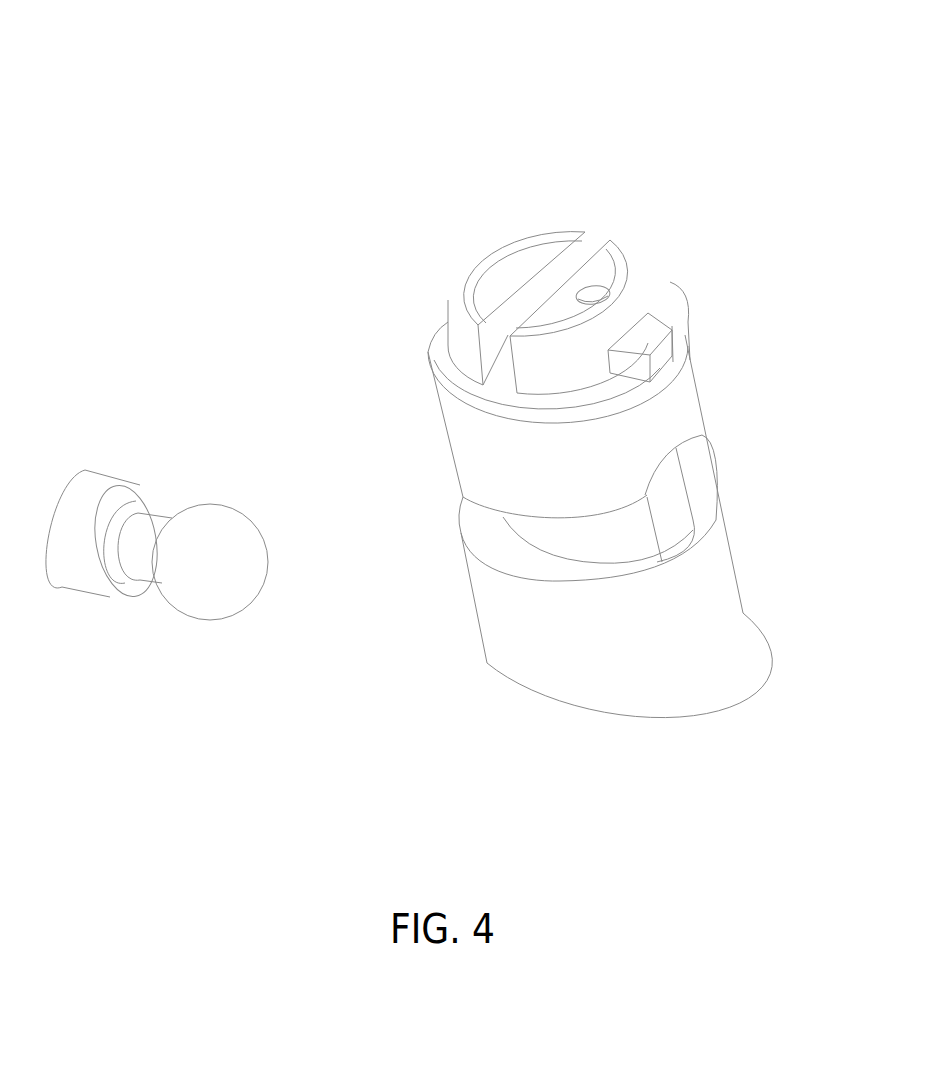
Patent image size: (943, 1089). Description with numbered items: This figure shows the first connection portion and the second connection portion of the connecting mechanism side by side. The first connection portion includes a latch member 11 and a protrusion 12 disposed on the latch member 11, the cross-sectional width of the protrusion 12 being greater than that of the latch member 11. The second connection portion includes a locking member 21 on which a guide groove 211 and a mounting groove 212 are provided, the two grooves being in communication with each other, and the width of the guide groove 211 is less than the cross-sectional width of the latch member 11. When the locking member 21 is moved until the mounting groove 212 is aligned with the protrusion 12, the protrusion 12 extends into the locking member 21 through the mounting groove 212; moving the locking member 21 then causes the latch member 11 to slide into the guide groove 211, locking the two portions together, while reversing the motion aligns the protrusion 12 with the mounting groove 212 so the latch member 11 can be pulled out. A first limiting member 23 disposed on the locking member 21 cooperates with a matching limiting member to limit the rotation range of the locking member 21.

The latch member 11 is at (145, 530).
The protrusion 12 is at (210, 594).
The locking member 21 is at (637, 633).
The guide groove 211 is at (533, 540).
The mounting groove 212 is at (690, 510).
The first limiting member 23 is at (637, 343).